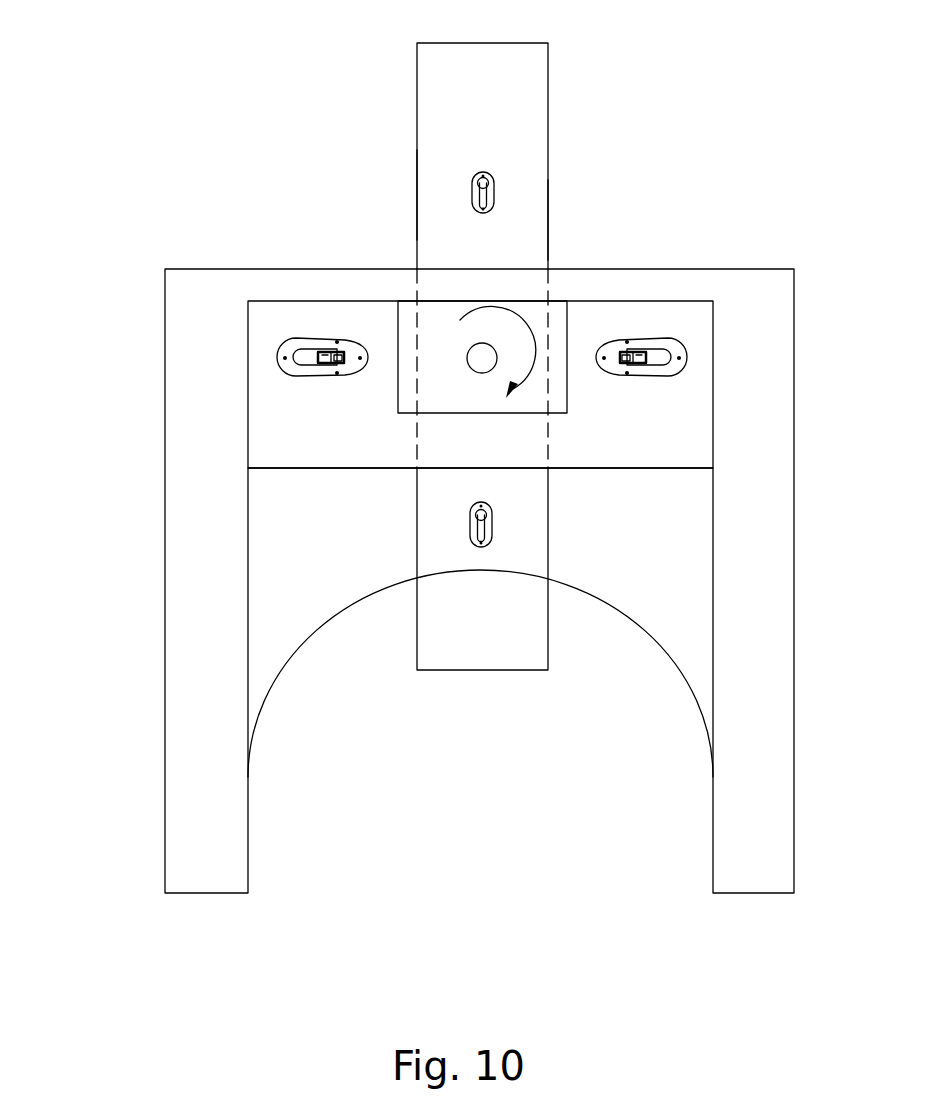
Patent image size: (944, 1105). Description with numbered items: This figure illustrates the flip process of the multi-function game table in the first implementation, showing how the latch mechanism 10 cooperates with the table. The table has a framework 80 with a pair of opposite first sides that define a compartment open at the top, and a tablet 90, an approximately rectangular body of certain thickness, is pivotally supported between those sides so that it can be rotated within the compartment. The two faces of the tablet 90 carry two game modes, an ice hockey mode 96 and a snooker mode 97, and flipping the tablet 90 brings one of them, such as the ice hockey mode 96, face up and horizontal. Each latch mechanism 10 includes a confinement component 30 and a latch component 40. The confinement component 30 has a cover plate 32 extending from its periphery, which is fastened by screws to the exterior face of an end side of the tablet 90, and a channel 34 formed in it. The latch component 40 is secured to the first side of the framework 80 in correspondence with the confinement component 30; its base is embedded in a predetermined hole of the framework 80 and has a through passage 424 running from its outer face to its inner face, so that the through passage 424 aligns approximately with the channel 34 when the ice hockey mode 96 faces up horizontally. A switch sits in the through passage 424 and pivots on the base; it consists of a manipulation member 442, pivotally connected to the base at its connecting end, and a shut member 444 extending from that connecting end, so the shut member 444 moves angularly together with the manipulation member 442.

The latch mechanism 10 is at (757, 120).
The confinement component 30 is at (492, 190).
The cover plate 32 is at (493, 523).
The channel 34 is at (472, 184).
The latch component 40 is at (770, 172).
The through passage 424 is at (294, 346).
The manipulation member 442 is at (337, 340).
The shut member 444 is at (325, 363).
The framework 80 is at (158, 582).
The tablet 90 is at (410, 83).
The ice hockey mode 96 is at (548, 222).
The snooker mode 97 is at (417, 193).